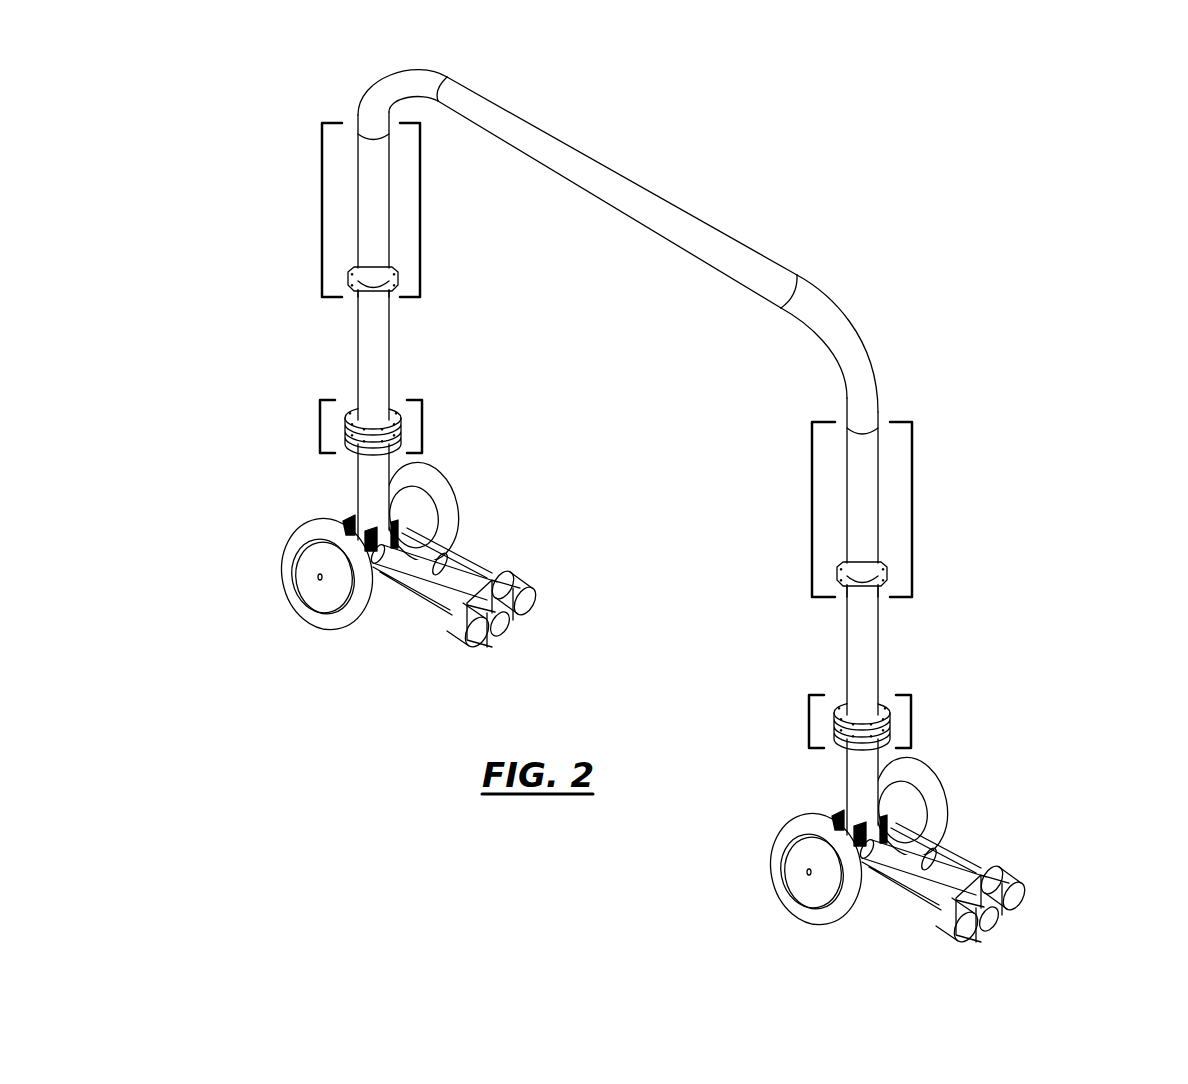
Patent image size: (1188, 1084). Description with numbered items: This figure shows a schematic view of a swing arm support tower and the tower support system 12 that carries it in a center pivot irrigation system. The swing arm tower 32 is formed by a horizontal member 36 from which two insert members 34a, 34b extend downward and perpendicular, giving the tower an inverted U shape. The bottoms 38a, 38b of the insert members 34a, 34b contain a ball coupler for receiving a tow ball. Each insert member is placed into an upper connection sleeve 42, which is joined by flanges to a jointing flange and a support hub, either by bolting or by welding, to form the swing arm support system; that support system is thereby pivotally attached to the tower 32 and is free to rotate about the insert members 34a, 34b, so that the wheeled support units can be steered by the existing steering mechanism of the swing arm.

The tower support system 12 is at (670, 597).
The swing arm tower 32 is at (639, 333).
The insert member 34a is at (868, 498).
The insert member 34b is at (367, 212).
The horizontal member 36 is at (610, 182).
The bottom of insert member 38a is at (867, 565).
The bottom of insert member 38b is at (375, 270).
The upper connection sleeve 42 is at (372, 358).